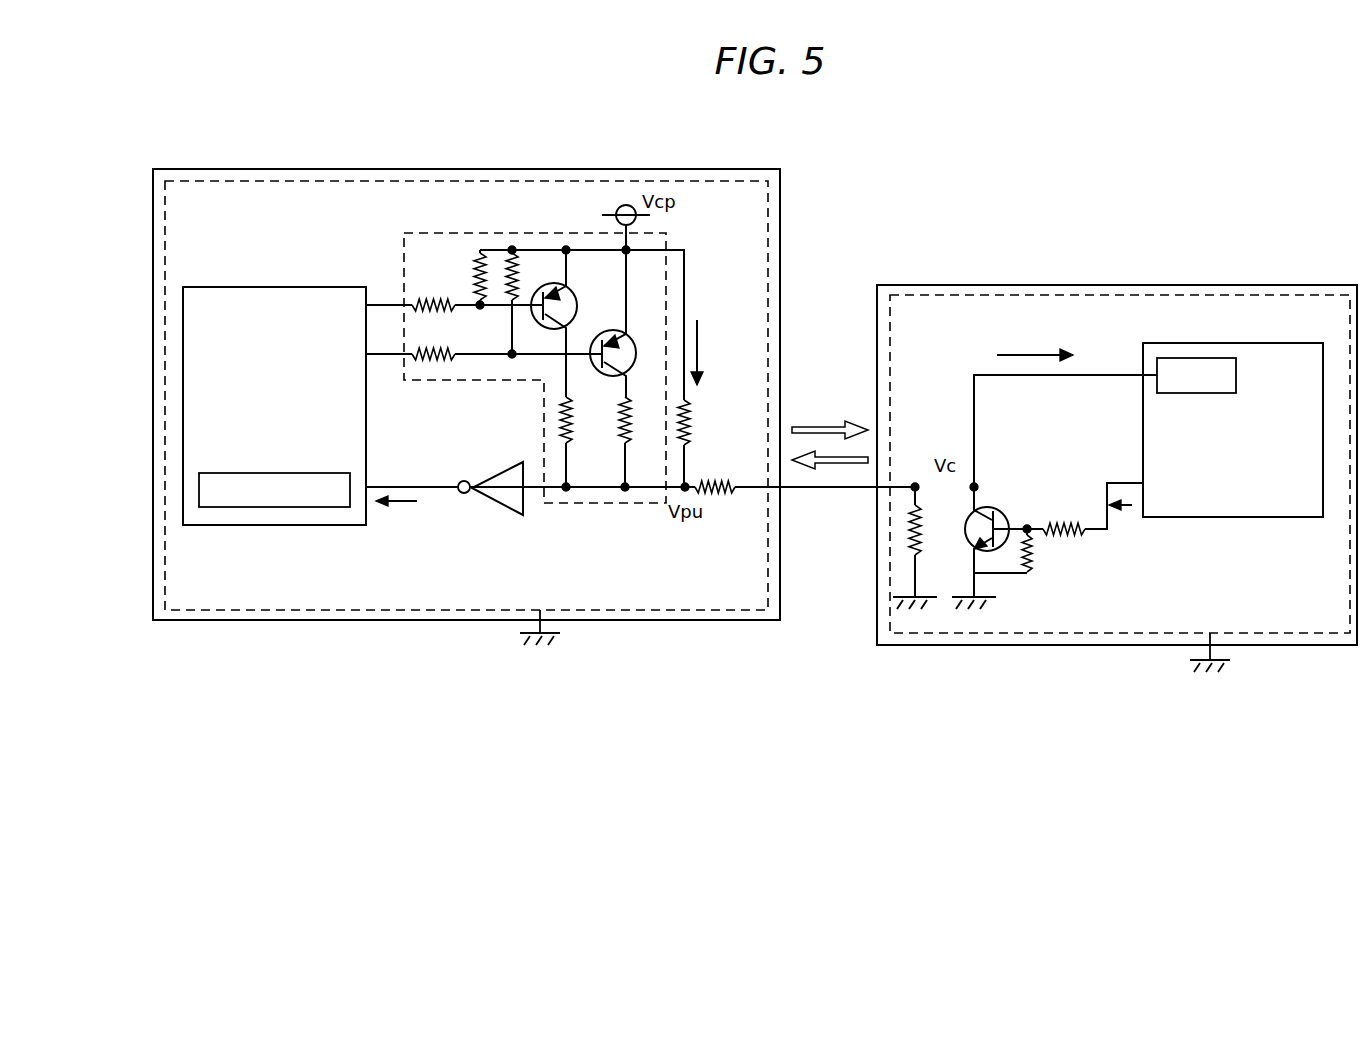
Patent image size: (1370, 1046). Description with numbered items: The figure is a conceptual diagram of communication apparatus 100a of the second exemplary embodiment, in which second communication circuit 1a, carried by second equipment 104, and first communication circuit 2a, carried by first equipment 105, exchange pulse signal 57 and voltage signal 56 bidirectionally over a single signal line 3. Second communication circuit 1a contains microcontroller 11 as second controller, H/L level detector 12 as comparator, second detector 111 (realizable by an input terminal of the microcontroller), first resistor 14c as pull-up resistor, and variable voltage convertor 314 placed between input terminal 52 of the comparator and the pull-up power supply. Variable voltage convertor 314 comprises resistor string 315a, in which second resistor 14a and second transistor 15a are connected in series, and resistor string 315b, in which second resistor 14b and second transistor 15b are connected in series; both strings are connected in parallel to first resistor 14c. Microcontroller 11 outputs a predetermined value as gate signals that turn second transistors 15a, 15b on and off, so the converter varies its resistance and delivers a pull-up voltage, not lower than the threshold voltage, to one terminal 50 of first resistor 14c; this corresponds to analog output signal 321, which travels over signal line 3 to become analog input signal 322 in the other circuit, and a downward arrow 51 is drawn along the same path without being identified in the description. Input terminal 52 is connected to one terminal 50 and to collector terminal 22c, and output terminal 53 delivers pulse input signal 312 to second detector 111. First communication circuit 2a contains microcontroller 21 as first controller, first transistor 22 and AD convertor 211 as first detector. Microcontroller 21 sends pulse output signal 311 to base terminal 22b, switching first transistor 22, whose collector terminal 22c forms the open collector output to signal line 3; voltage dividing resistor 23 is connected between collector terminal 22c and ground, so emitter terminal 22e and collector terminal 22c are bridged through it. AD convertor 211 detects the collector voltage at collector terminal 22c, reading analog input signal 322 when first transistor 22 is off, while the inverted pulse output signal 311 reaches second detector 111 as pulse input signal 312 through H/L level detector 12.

The second communication circuit 1a is at (242, 610).
The first communication circuit 2a is at (1320, 633).
The signal line 3 is at (855, 490).
The microcontroller 11 is at (291, 287).
The H/L level detector 12 is at (497, 515).
The second resistor 14a is at (569, 437).
The second resistor 14b is at (628, 437).
The first resistor 14c is at (686, 420).
The second transistor 15a is at (545, 290).
The second transistor 15b is at (605, 332).
The microcontroller 21 is at (1290, 343).
The first transistor 22 is at (1000, 505).
The base terminal 22b is at (1010, 520).
The collector terminal 22c is at (975, 498).
The emitter terminal 22e is at (975, 578).
The voltage dividing resistor 23 is at (908, 545).
The one terminal 50 is at (686, 465).
The current 51 is at (684, 312).
The input terminal 52 is at (533, 490).
The output terminal 53 is at (437, 490).
The voltage signal 56 is at (812, 432).
The pulse signal 57 is at (838, 463).
The communication apparatus 100a is at (885, 243).
The second equipment 104 is at (443, 620).
The first equipment 105 is at (1267, 645).
The second detector 111 is at (235, 507).
The AD convertor 211 is at (1205, 358).
The pulse output signal 311 is at (1125, 508).
The pulse input signal 312 is at (404, 503).
The variable voltage convertor 314 is at (435, 232).
The resistor string 315a is at (526, 416).
The resistor string 315b is at (639, 416).
The analog output signal 321 is at (700, 360).
The analog input signal 322 is at (1033, 353).